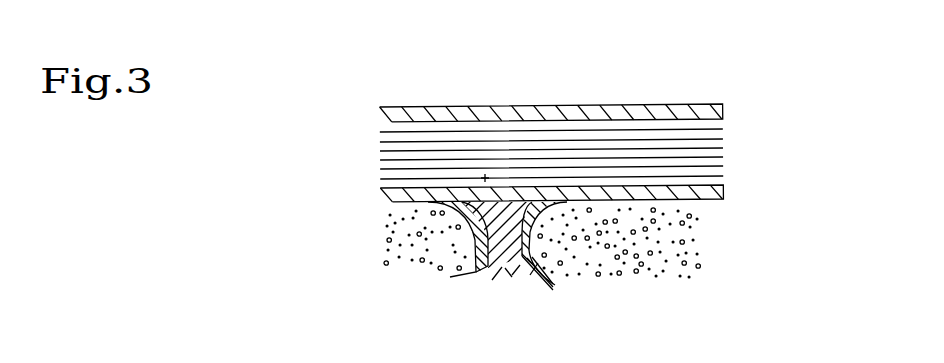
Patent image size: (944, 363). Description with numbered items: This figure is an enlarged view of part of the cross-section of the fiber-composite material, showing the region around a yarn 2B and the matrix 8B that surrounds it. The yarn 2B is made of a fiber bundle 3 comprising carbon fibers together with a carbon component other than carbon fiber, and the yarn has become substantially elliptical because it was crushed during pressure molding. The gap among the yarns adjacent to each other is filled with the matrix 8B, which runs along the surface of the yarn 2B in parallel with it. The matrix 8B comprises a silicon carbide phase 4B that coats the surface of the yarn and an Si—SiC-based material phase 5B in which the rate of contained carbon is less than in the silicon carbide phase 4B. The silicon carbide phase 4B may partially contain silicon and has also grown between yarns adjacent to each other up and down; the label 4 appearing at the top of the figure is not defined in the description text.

The yarn 2B is at (370, 233).
The fiber bundle 3 is at (635, 250).
The laminated sheet 4 is at (531, 113).
The silicon carbide phase 4B is at (478, 278).
The Si—SiC-based material phase 5B is at (497, 275).
The matrix 8B is at (485, 176).